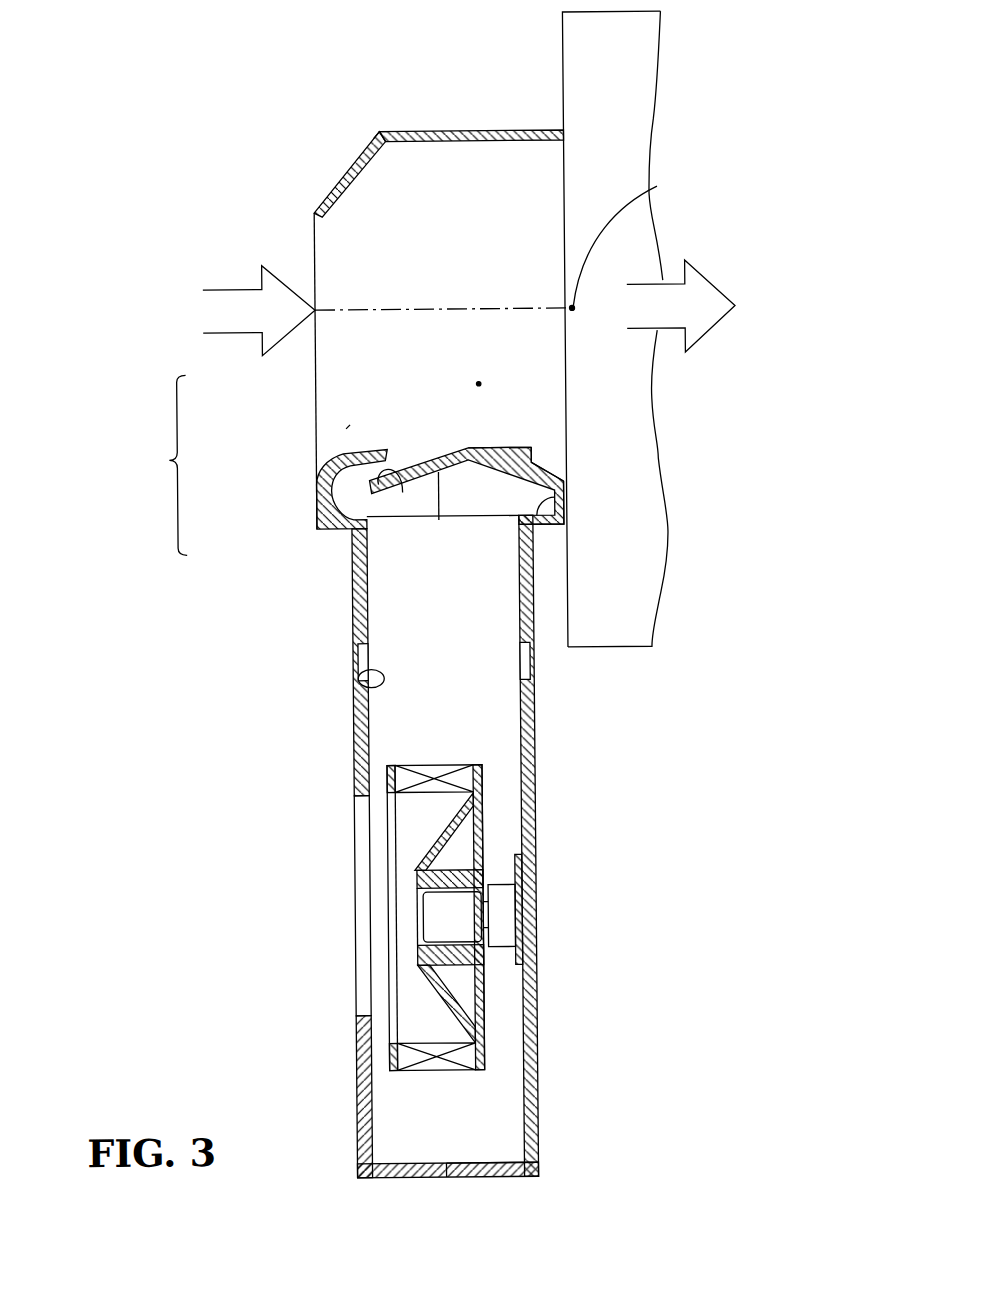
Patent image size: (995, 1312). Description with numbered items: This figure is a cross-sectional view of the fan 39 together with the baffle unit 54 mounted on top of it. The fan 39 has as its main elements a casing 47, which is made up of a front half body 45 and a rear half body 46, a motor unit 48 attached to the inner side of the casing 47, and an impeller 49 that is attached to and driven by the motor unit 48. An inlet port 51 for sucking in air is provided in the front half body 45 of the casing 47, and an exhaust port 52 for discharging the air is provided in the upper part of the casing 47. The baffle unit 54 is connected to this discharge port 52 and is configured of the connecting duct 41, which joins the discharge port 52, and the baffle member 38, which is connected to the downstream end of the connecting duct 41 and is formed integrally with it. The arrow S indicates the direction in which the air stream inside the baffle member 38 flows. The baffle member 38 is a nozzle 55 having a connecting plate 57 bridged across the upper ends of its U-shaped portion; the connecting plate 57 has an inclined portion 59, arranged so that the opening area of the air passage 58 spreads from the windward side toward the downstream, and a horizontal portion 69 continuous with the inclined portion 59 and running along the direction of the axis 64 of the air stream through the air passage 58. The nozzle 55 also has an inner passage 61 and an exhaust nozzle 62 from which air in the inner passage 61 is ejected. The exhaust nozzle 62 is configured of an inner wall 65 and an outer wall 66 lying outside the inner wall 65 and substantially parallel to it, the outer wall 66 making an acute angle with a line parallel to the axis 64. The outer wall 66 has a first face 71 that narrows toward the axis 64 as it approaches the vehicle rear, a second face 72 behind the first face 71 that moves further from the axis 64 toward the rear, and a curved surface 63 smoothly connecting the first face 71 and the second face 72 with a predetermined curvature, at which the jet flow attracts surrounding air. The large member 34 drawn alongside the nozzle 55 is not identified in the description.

The duct wall 34 is at (612, 623).
The baffle member 38 is at (342, 396).
The fan 39 is at (334, 1070).
The connecting duct 41 is at (352, 576).
The front half body 45 is at (410, 1177).
The rear half body 46 is at (477, 1177).
The casing 47 is at (398, 1223).
The motor unit 48 is at (406, 930).
The impeller 49 is at (402, 780).
The inlet port 51 is at (352, 803).
The exhaust port 52 is at (358, 688).
The baffle unit 54 is at (162, 465).
The nozzle 55 is at (352, 424).
The connecting plate 57 is at (382, 130).
The air passage 58 is at (481, 384).
The inclined portion 59 is at (339, 186).
The inner passage 61 is at (536, 524).
The exhaust nozzle 62 is at (406, 449).
The curved surface 63 is at (471, 448).
The axis 64 is at (656, 190).
The inner wall 65 is at (340, 468).
The outer wall 66 is at (440, 520).
The horizontal portion 69 is at (427, 130).
The first face 71 is at (404, 492).
The second face 72 is at (519, 452).
The arrow S is at (674, 284).